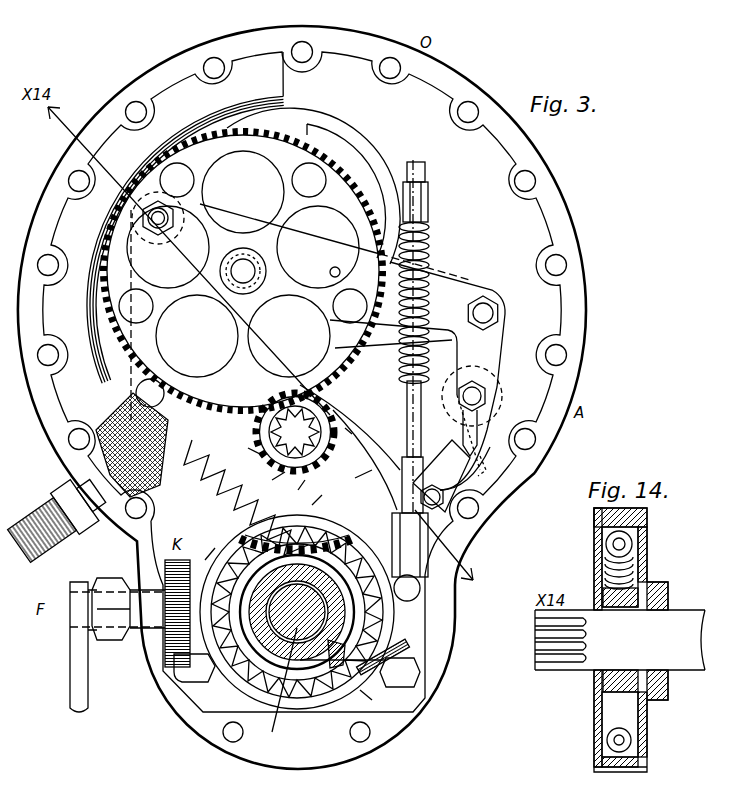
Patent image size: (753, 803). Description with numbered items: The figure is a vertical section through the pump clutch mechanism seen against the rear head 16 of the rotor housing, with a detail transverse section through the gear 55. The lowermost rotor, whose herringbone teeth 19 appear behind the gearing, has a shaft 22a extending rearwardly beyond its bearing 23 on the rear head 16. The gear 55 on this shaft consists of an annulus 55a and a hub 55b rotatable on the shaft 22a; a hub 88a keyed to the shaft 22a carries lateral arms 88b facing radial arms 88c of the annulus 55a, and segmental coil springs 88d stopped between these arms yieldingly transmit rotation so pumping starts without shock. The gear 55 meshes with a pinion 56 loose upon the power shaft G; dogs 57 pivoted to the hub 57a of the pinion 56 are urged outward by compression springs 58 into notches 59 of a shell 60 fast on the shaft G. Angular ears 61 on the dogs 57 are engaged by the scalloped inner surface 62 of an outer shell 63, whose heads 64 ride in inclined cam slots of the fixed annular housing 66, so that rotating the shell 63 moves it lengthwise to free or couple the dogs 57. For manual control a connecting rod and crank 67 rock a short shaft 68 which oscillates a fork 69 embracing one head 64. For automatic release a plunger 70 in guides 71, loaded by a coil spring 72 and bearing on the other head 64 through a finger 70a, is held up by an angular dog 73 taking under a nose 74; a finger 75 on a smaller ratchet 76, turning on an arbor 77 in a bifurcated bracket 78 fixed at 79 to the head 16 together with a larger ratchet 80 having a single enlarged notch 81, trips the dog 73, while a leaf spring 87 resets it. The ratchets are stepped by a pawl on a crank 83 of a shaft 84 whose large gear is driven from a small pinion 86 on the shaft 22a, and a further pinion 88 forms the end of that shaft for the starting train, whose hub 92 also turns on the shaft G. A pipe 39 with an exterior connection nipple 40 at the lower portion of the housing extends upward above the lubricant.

In FIG. 3, the rear head 16 is at (427, 100).
In FIG. 3, the pipe 39 is at (173, 100).
In FIG. 3, the bearing 23 is at (368, 148).
In FIG. 3, the shaft 84 is at (225, 258).
In FIG. 3, the crank 83 is at (268, 272).
In FIG. 3, the herringbone teeth 19 is at (147, 218).
In FIG. 3, the plunger 70 is at (423, 172).
In FIG. 3, the guides 71 is at (428, 202).
In FIG. 3, the coil compression spring 72 is at (430, 242).
In FIG. 3, the fixing of bracket 79 is at (483, 306).
In FIG. 3, the bifurcated bracket 78 is at (497, 335).
In FIG. 3, the rearward hub 92 is at (427, 343).
In FIG. 3, the single notch 81 is at (494, 380).
In FIG. 3, the arbor 77 is at (486, 397).
In FIG. 3, the larger ratchet 80 is at (480, 420).
In FIG. 3, the nose 74 is at (430, 458).
In FIG. 3, the angular dog 73 is at (445, 481).
In FIG. 3, the smaller ratchet 76 is at (491, 457).
In FIG. 3, the finger 75 is at (468, 468).
In FIG. 3, the leaf spring 87 is at (490, 490).
In FIG. 3, the rotor shaft 22a is at (336, 410).
In FIG. 14, the rotor shaft 22a is at (683, 668).
In FIG. 3, the small pinion 86 is at (333, 455).
In FIG. 3, the pinion 88 is at (360, 435).
In FIG. 14, the pinion 88 is at (560, 636).
In FIG. 3, the hub 88a is at (245, 449).
In FIG. 14, the hub 88a is at (603, 597).
In FIG. 3, the lateral arms 88b is at (288, 487).
In FIG. 14, the lateral arms 88b is at (607, 709).
In FIG. 3, the radial arms 88c is at (329, 488).
In FIG. 3, the segmental coil springs 88d is at (266, 478).
In FIG. 14, the segmental coil springs 88d is at (607, 548).
In FIG. 3, the connection nipple 40 is at (58, 536).
In FIG. 3, the connecting rod and crank 67 is at (75, 672).
In FIG. 3, the short shaft 68 is at (160, 590).
In FIG. 3, the heads 64 is at (165, 663).
In FIG. 3, the outer shell 63 is at (185, 674).
In FIG. 3, the scalloped inner surface 62 is at (250, 660).
In FIG. 3, the shell 60 is at (225, 690).
In FIG. 3, the notches 59 is at (250, 690).
In FIG. 3, the dogs 57 is at (338, 660).
In FIG. 3, the pinion 56 is at (277, 598).
In FIG. 3, the fork 69 is at (207, 555).
In FIG. 3, the power shaft G is at (273, 687).
In FIG. 3, the compression springs 58 is at (330, 690).
In FIG. 3, the hub 57a is at (395, 690).
In FIG. 3, the annular housing 66 is at (420, 680).
In FIG. 3, the angular ears 61 is at (372, 700).
In FIG. 3, the finger 70a is at (420, 596).
In FIG. 14, the gear 55 is at (594, 576).
In FIG. 14, the annulus 55a is at (594, 519).
In FIG. 14, the hub 55b is at (666, 586).